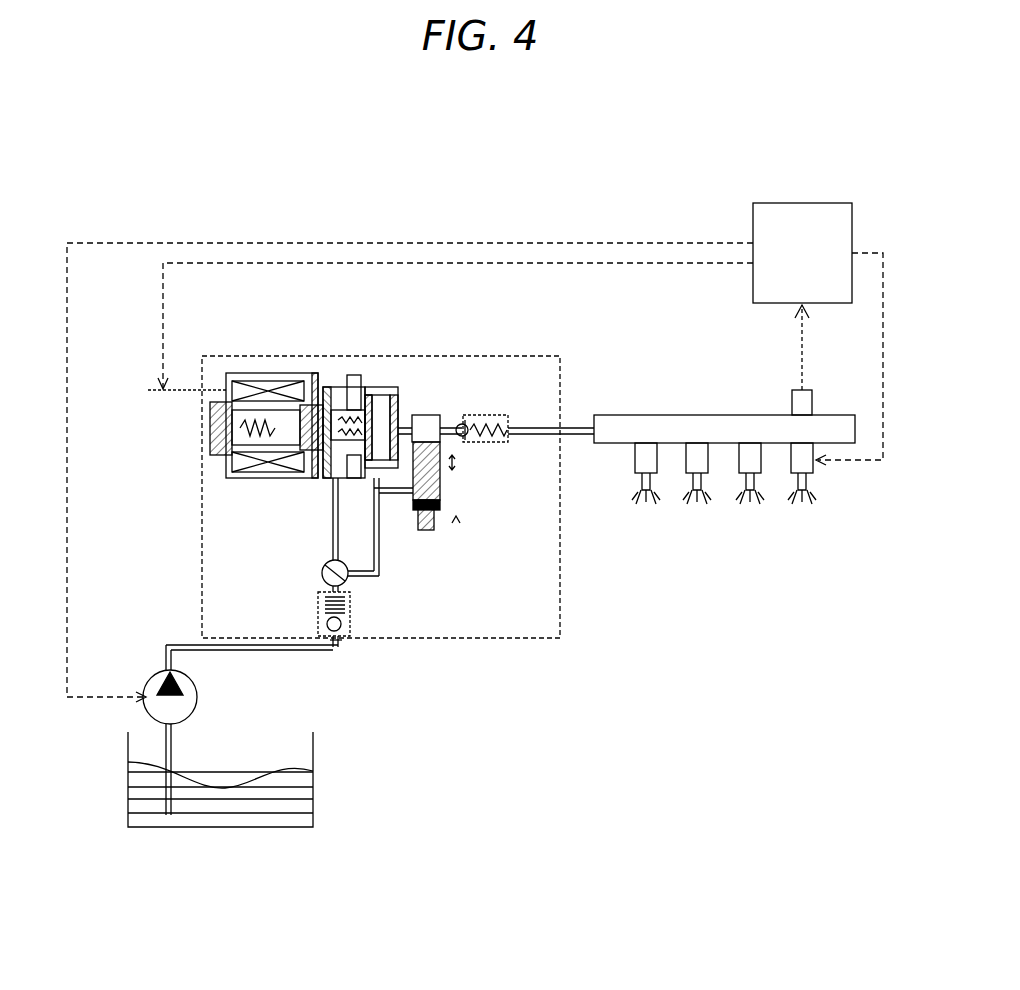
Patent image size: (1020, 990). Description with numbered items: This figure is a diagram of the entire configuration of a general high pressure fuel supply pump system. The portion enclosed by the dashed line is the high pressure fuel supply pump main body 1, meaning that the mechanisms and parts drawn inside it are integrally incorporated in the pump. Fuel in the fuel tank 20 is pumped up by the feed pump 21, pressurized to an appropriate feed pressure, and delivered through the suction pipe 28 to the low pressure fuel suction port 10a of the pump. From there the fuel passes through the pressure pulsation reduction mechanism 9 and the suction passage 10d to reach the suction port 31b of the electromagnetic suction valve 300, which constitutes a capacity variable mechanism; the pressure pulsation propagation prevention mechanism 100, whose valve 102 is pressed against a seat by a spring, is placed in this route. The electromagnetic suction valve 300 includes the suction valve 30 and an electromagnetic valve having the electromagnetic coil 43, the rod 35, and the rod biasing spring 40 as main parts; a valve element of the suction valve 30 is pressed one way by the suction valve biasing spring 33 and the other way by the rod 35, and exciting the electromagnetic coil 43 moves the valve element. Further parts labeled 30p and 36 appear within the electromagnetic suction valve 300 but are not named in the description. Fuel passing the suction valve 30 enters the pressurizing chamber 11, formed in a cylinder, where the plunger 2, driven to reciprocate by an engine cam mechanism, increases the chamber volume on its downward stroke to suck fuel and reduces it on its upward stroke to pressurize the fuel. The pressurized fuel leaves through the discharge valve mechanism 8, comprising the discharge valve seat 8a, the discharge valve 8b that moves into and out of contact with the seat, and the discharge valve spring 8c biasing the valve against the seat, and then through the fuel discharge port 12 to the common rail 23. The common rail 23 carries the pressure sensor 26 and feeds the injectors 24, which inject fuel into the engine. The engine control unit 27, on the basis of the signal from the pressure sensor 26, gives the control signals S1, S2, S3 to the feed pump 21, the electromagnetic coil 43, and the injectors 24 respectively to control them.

The high pressure fuel supply pump main body 1 is at (470, 356).
The plunger 2 is at (426, 531).
The discharge valve mechanism 8 is at (501, 490).
The discharge valve seat 8a is at (466, 441).
The discharge valve 8b is at (473, 445).
The discharge valve spring 8c is at (497, 445).
The pressure pulsation reduction mechanism 9 is at (349, 582).
The low pressure fuel suction port 10a is at (340, 640).
The suction passage 10d is at (335, 492).
The pressurizing chamber 11 is at (422, 414).
The fuel discharge port 12 is at (563, 412).
The fuel tank 20 is at (313, 782).
The feed pump 21 is at (148, 706).
The common rail 23 is at (661, 428).
The injectors 24 is at (815, 465).
The pressure sensor 26 is at (795, 398).
The engine control unit 27 is at (818, 203).
The suction pipe 28 is at (272, 650).
The suction valve 30 is at (314, 398).
The pin 30p is at (350, 378).
The suction port 31b is at (332, 468).
The suction valve biasing spring 33 is at (337, 390).
The rod 35 is at (280, 412).
The movable core 36 is at (240, 418).
The rod biasing spring 40 is at (250, 438).
The electromagnetic coil 43 is at (242, 385).
The pressure pulsation propagation prevention mechanism 100 is at (321, 578).
The valve 102 is at (321, 616).
The electromagnetic suction valve 300 is at (230, 390).
The control signal S1 is at (67, 418).
The control signal S2 is at (163, 328).
The control signal S3 is at (884, 352).